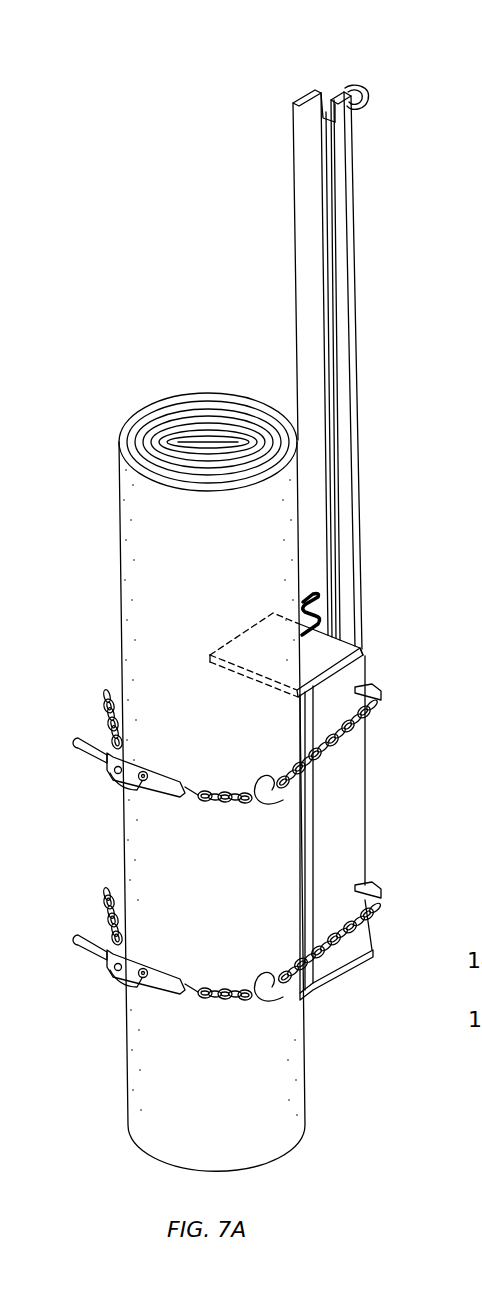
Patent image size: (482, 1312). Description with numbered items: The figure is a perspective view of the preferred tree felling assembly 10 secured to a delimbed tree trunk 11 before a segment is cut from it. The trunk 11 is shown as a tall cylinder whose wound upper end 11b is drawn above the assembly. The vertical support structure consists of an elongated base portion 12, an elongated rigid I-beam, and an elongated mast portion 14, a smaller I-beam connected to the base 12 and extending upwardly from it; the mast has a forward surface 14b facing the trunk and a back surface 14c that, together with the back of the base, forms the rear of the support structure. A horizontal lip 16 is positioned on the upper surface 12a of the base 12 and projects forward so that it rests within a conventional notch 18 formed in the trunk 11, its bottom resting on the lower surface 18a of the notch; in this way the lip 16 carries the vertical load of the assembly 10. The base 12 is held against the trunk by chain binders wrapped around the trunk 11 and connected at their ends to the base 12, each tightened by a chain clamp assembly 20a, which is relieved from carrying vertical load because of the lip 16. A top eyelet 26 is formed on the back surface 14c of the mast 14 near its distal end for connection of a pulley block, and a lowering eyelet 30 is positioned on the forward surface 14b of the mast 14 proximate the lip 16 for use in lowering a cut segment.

The tree felling assembly 10 is at (108, 270).
The tree trunk 11 is at (130, 1111).
The coil top (wound roll) 11b is at (157, 420).
The base portion 12 is at (362, 857).
The upper surface 12a is at (362, 640).
The mast portion 14 is at (311, 369).
The forward surface 14b is at (310, 215).
The back surface 14c is at (347, 303).
The lip 16 is at (317, 660).
The notch 18 is at (313, 713).
The lower surface 18a is at (323, 683).
The chain clamp assemblies 20a is at (102, 773).
The top eyelet 26 is at (357, 84).
The lowering eyelet 30 is at (303, 600).